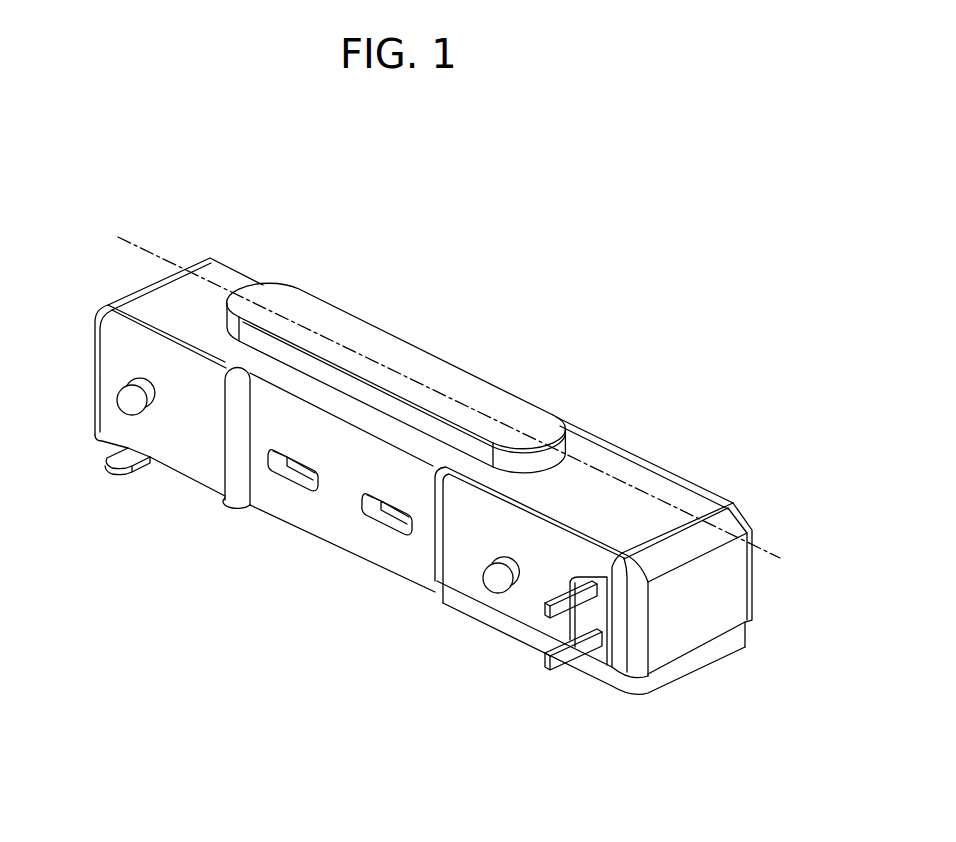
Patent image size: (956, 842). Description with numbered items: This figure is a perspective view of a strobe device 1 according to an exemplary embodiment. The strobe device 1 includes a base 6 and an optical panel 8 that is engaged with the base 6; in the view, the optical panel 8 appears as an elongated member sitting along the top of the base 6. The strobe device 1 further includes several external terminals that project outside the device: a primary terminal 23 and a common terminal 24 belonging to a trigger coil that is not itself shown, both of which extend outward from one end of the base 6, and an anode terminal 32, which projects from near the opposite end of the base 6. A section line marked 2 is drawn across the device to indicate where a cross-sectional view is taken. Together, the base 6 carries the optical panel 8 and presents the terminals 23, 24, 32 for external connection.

The strobe device 1 is at (648, 200).
The section line II-II 2 is at (118, 237).
The base 6 is at (470, 613).
The optical panel 8 is at (481, 393).
The primary terminal 23 is at (546, 608).
The common terminal 24 is at (554, 668).
The anode terminal 32 is at (115, 467).